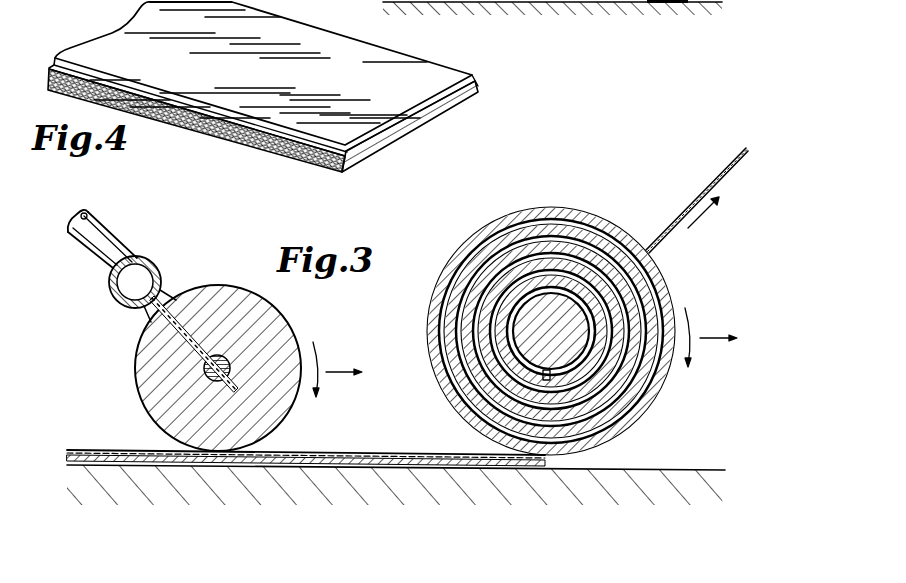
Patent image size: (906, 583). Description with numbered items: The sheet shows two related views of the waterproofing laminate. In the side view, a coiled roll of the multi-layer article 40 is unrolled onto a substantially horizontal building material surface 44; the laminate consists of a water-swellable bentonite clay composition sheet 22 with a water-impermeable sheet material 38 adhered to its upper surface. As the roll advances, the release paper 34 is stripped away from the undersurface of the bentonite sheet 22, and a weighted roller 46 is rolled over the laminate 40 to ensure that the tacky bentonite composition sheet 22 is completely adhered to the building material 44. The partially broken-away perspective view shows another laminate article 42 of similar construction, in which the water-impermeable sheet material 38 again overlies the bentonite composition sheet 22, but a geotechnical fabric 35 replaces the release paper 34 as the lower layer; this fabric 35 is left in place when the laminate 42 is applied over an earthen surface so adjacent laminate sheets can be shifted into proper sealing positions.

In FIG. 4, the water-swellable clay composition sheet 22 is at (433, 117).
In FIG. 3, the water-swellable clay composition sheet 22 is at (429, 440).
In FIG. 3, the release paper 34 is at (697, 193).
In FIG. 4, the geotechnical fabric 35 is at (290, 157).
In FIG. 4, the water-impermeable sheet material 38 is at (433, 62).
In FIG. 3, the water-impermeable sheet material 38 is at (329, 454).
In FIG. 3, the multi-layer laminate article 40 is at (366, 453).
In FIG. 4, the laminate article with fabric layer 42 is at (330, 25).
In FIG. 3, the building material surface 44 is at (380, 484).
In FIG. 3, the weighted roller 46 is at (137, 379).